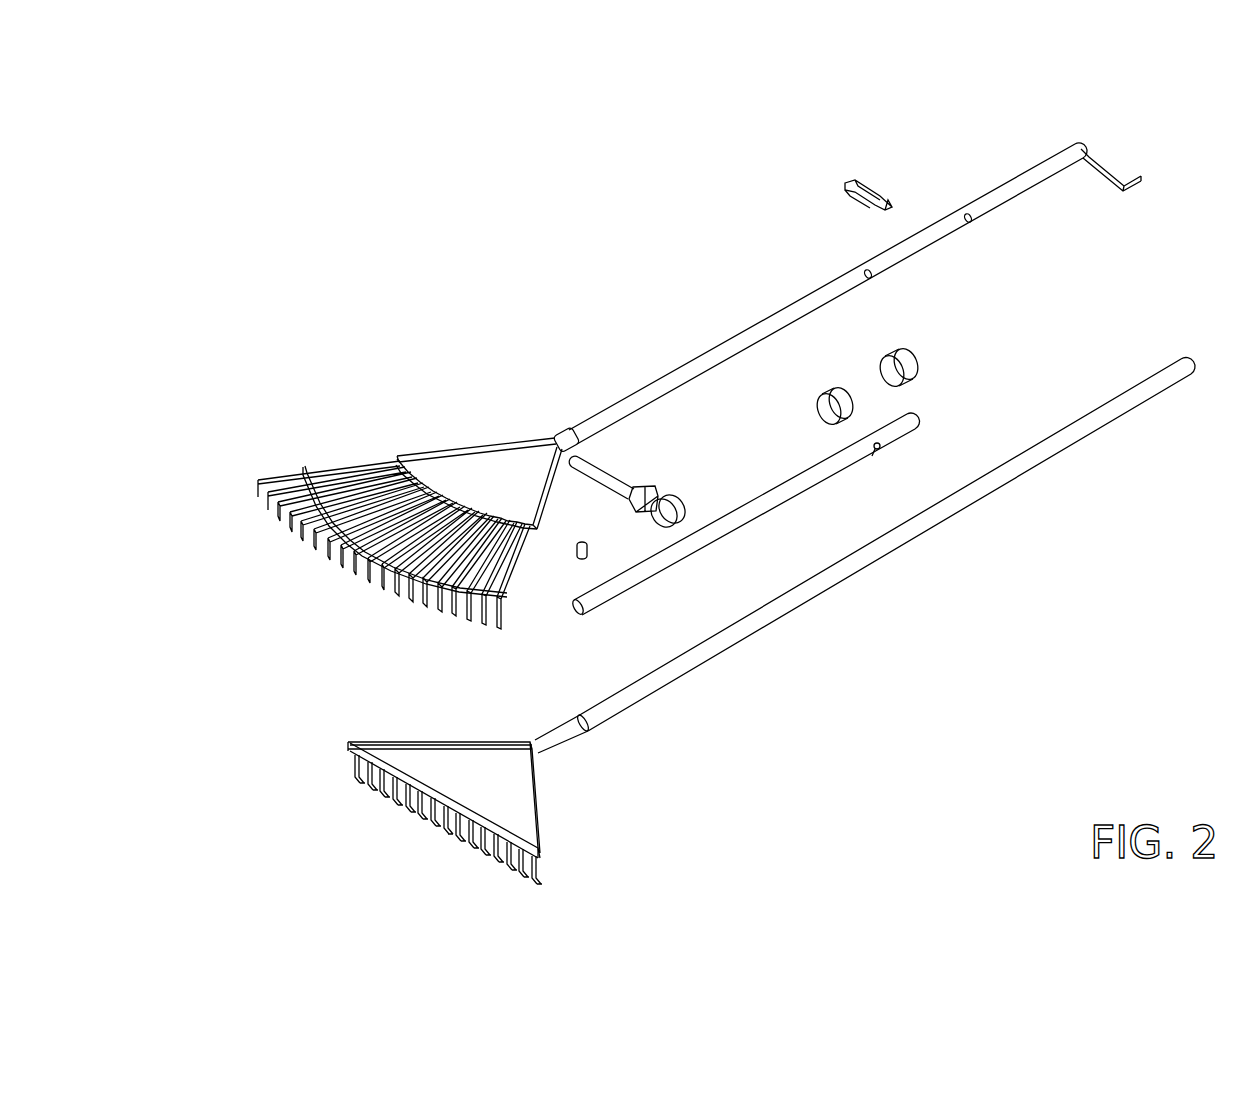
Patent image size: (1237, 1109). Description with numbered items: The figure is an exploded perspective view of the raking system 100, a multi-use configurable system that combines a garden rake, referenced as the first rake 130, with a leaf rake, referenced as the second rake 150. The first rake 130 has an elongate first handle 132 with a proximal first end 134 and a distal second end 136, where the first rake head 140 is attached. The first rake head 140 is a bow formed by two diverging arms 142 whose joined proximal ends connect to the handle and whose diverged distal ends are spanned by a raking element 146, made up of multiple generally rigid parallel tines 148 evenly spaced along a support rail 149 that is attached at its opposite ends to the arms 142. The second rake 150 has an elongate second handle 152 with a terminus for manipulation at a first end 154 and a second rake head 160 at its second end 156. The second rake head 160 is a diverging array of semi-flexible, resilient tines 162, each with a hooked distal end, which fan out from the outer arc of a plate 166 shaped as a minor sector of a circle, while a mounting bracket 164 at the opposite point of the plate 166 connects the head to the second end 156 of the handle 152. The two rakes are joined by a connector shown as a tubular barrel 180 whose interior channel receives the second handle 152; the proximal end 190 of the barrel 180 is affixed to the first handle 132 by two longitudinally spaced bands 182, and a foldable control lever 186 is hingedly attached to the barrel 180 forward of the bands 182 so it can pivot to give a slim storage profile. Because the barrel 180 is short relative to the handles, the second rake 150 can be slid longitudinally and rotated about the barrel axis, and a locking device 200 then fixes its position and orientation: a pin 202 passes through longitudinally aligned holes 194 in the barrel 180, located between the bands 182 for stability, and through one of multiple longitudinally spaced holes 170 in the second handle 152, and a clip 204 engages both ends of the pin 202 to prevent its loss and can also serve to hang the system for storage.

The raking system 100 is at (468, 302).
The first rake 130 is at (990, 424).
The first handle 132 is at (1052, 440).
The proximal first end 134 is at (1178, 358).
The distal second end 136 is at (586, 726).
The first rake head 140 is at (505, 746).
The diverging arms 142 is at (395, 742).
The raking element 146 is at (378, 830).
The tines 148 is at (430, 840).
The support rail 149 is at (434, 778).
The second rake 150 is at (693, 286).
The second handle 152 is at (778, 312).
The first end 154 is at (1060, 140).
The second end 156 is at (566, 425).
The second rake head 160 is at (432, 424).
The tines 162 is at (262, 520).
The mounting bracket 164 is at (556, 434).
The plate 166 is at (522, 482).
The holes 170 is at (870, 270).
The tubular barrel 180 is at (737, 510).
The bands 182 is at (830, 396).
The foldable control lever 186 is at (628, 490).
The proximal end 190 is at (915, 418).
The aligned holes 194 is at (872, 418).
The locking device 200 is at (828, 163).
The pin 202 is at (870, 190).
The clip 204 is at (840, 190).